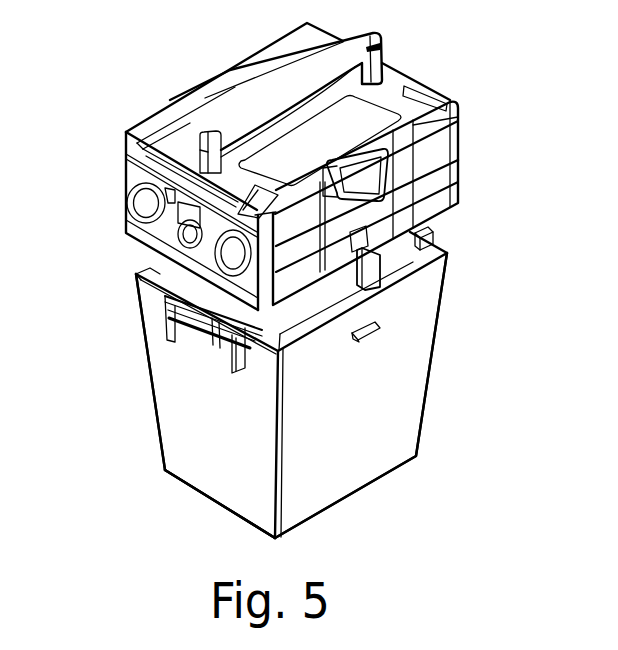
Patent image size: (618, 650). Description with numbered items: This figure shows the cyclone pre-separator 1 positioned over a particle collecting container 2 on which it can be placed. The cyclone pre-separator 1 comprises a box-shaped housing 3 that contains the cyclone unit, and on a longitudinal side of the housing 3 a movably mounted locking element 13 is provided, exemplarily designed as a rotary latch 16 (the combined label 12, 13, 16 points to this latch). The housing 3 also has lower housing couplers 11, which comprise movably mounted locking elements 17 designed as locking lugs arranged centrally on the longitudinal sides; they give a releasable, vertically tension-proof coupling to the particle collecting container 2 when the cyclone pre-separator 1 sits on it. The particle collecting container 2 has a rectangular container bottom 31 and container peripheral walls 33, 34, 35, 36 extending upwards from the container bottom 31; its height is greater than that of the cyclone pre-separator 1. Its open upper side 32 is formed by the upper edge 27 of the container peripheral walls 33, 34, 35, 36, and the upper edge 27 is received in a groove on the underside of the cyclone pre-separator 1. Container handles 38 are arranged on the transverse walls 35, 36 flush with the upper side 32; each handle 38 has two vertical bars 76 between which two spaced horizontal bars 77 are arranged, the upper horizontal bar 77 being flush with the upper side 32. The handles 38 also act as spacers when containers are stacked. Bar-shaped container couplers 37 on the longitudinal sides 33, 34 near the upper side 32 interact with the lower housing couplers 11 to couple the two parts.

The cyclone pre-separator 1 is at (353, 166).
The housing 3 is at (353, 166).
The particle collecting container 2 is at (279, 389).
The lower housing couplers 11 is at (446, 265).
The locking elements 17 is at (380, 273).
The locking device 12 is at (452, 195).
The locking element 13 is at (452, 195).
The rotary latch 16 is at (373, 178).
The upper edge 27 is at (134, 266).
The container bottom 31 is at (279, 389).
The open upper side 32 is at (425, 238).
The container peripheral wall 33 is at (396, 395).
The container peripheral wall 34 is at (138, 419).
The container peripheral wall 35 is at (222, 493).
The container peripheral wall 36 is at (443, 391).
The container couplers 37 is at (380, 335).
The container handles 38 is at (214, 377).
The vertical bars 76 is at (166, 340).
The horizontal bars 77 is at (212, 345).